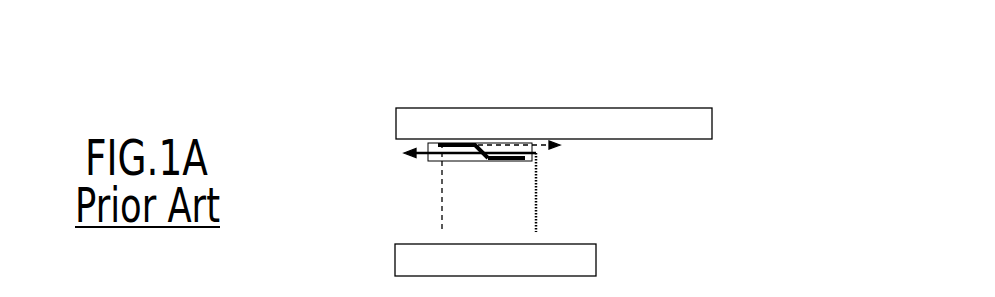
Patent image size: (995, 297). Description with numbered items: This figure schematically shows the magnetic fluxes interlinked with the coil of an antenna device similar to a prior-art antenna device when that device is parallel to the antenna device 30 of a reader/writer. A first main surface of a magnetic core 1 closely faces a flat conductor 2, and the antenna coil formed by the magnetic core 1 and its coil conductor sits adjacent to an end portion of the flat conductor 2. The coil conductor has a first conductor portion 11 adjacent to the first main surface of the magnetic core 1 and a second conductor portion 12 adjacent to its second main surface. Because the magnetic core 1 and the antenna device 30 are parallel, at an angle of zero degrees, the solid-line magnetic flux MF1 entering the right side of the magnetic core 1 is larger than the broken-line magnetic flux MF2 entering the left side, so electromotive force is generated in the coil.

The magnetic core 1 is at (428, 160).
The flat conductor 2 is at (703, 124).
The first conductor portion 11 is at (460, 140).
The second conductor portion 12 is at (508, 162).
The antenna device of the reader/writer 30 is at (583, 262).
The magnetic flux MF1 is at (532, 186).
The magnetic flux MF2 is at (467, 187).